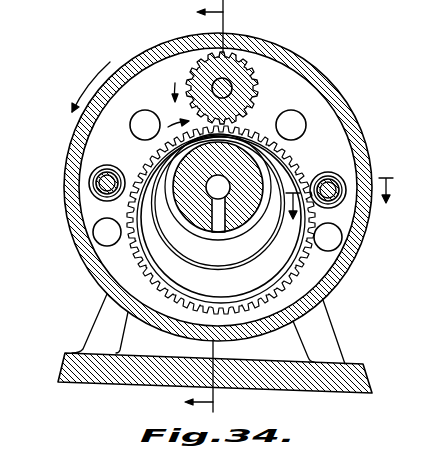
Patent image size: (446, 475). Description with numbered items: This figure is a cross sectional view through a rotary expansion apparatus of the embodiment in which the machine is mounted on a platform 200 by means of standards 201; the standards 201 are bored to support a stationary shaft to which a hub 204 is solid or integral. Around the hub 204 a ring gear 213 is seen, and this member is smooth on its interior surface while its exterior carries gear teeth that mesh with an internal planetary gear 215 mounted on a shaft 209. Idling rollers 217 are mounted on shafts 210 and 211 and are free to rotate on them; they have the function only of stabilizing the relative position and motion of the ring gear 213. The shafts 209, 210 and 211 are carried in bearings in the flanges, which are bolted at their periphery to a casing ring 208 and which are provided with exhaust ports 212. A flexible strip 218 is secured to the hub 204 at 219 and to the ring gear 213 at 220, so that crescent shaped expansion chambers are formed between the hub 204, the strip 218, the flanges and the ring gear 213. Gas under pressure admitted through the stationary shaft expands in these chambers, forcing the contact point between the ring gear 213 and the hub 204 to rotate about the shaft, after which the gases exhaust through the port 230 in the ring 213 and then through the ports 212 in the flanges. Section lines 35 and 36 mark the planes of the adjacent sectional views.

The section line 35- 35 is at (184, 207).
The section line 36- 36 is at (343, 210).
The platform 200 is at (60, 381).
The standards 201 is at (102, 305).
The hub 204 is at (177, 169).
The casing ring 208 is at (345, 117).
The shaft 209 is at (254, 80).
The shaft 210 is at (340, 177).
The shaft 211 is at (96, 181).
The exhaust ports 212 is at (163, 97).
The ring gear 213 is at (292, 155).
The internal planetary gear 215 is at (236, 80).
The idling rollers 217 is at (94, 170).
The flexible strip 218 is at (283, 251).
The strip attachment to hub 219 is at (243, 223).
The strip attachment to ring gear 220 is at (277, 293).
The exhaust port 230 is at (220, 310).